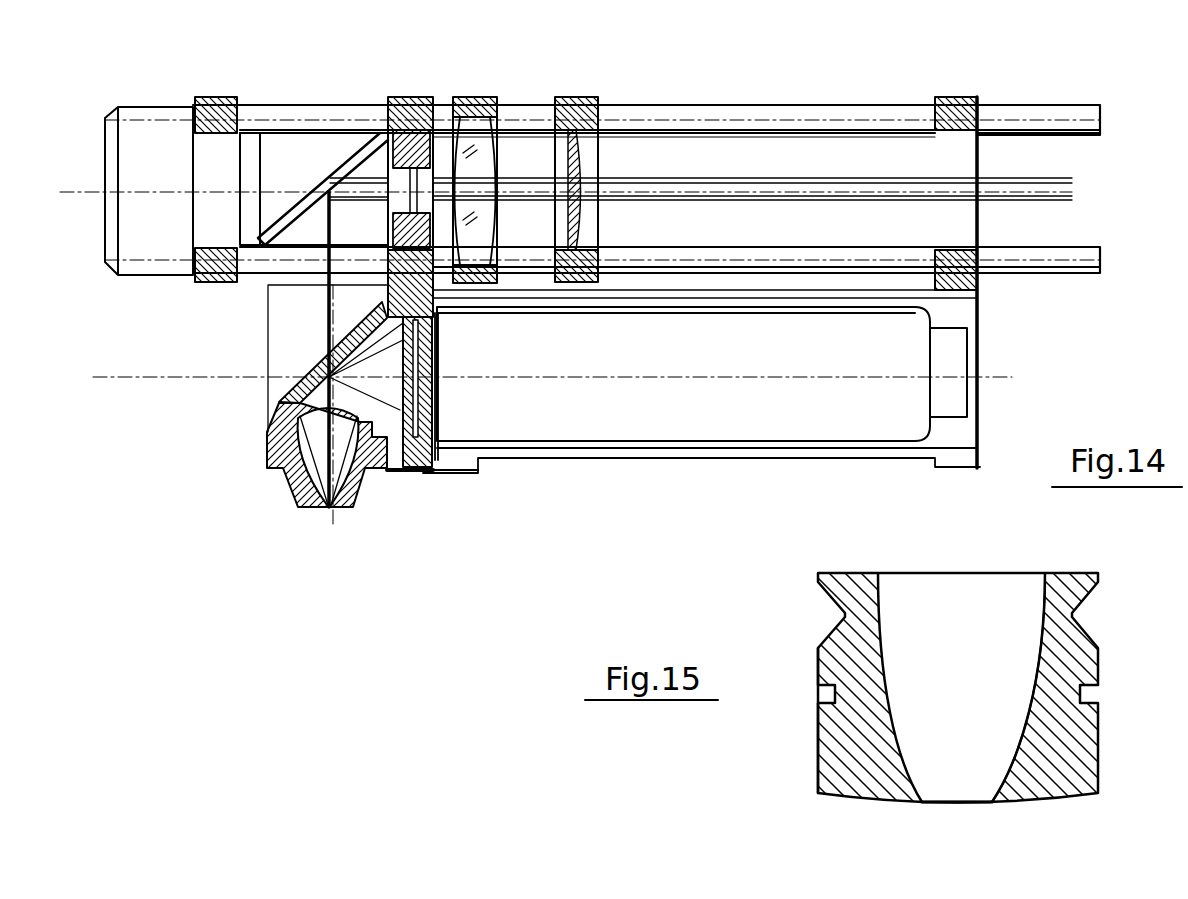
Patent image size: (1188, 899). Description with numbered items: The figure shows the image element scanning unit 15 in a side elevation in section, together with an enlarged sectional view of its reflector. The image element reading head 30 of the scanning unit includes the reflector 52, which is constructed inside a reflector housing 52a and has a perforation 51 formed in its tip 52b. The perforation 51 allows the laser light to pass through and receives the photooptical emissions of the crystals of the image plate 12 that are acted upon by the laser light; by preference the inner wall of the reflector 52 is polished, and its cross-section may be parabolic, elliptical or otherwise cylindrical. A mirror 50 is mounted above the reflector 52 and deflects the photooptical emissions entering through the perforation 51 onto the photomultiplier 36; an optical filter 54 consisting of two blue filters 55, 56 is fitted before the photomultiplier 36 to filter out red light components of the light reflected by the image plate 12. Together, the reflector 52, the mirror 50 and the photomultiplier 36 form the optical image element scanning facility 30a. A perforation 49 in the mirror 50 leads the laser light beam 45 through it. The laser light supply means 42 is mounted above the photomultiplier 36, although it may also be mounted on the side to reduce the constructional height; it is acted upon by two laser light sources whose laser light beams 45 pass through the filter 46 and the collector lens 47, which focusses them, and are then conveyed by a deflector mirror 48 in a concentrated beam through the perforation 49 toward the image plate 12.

In FIG. 14, the image plate 12 is at (170, 448).
In FIG. 14, the image element scanning unit 15 is at (700, 93).
In FIG. 14, the image element reading head 30 is at (330, 522).
In FIG. 14, the optical image element scanning facility 30a is at (590, 497).
In FIG. 14, the photomultiplier 36 is at (657, 430).
In FIG. 14, the laser light supply means 42 is at (757, 163).
In FIG. 14, the laser light beams 45 is at (890, 195).
In FIG. 14, the filter 46 is at (588, 130).
In FIG. 14, the collector lens 47 is at (472, 143).
In FIG. 14, the deflector mirror 48 is at (365, 142).
In FIG. 14, the perforation 49 is at (310, 352).
In FIG. 14, the mirror 50 is at (402, 395).
In FIG. 14, the perforation 51 is at (320, 510).
In FIG. 15, the perforation 51 is at (967, 807).
In FIG. 14, the reflector 52 is at (293, 490).
In FIG. 15, the reflector 52 is at (907, 757).
In FIG. 15, the reflector housing 52a is at (830, 777).
In FIG. 15, the tip 52b is at (938, 808).
In FIG. 14, the optical filter 54 is at (417, 477).
In FIG. 14, the blue filter 55 is at (398, 477).
In FIG. 14, the blue filter 56 is at (447, 473).